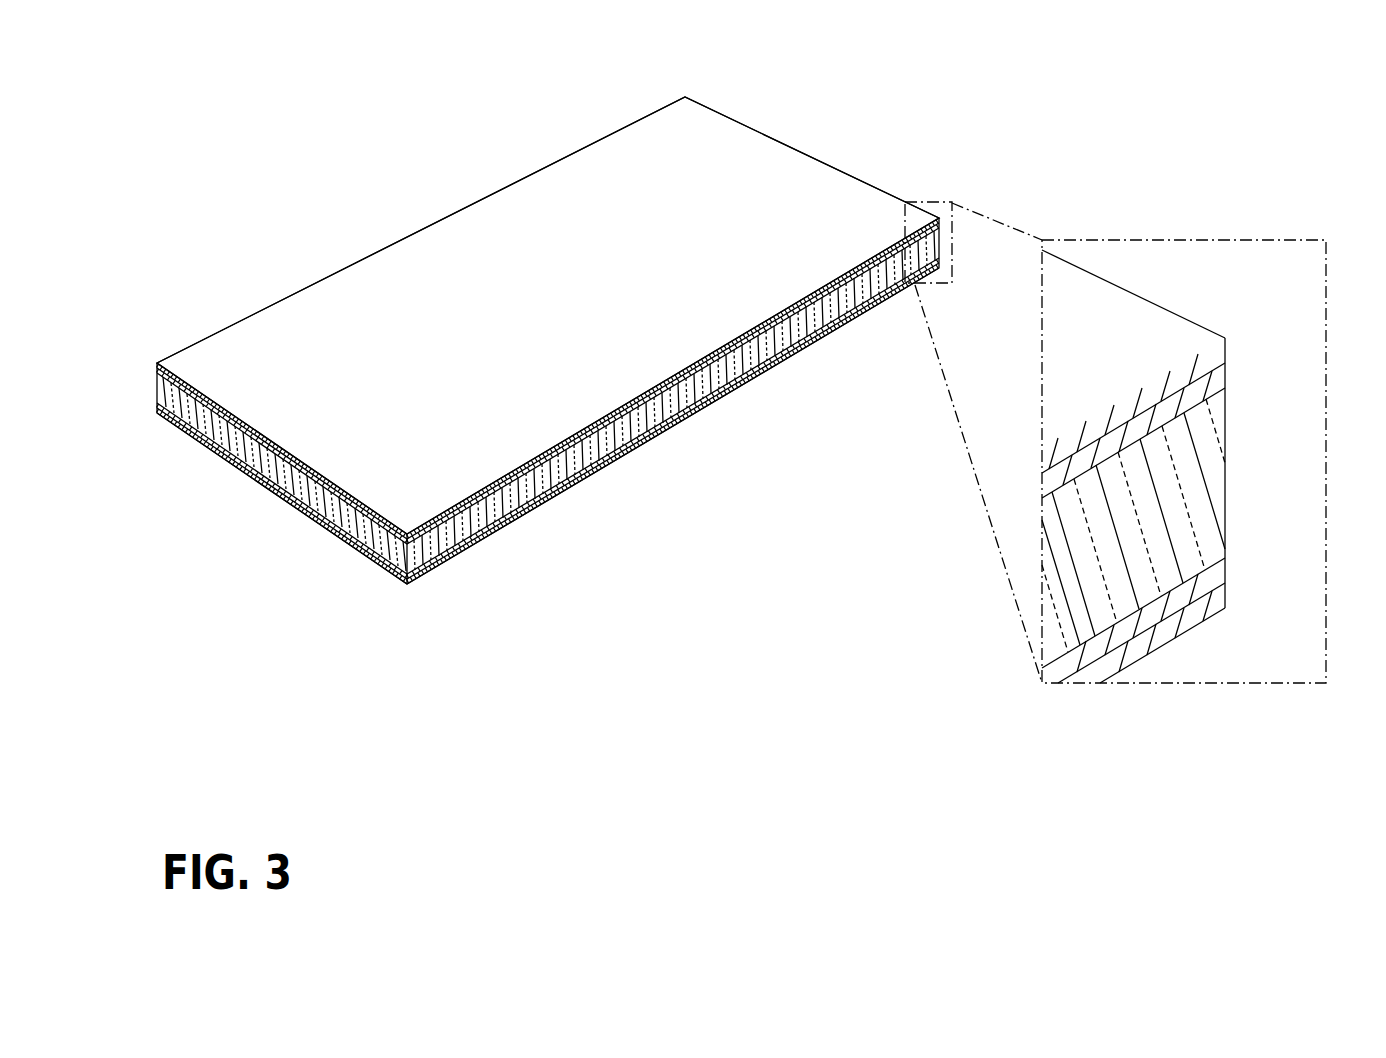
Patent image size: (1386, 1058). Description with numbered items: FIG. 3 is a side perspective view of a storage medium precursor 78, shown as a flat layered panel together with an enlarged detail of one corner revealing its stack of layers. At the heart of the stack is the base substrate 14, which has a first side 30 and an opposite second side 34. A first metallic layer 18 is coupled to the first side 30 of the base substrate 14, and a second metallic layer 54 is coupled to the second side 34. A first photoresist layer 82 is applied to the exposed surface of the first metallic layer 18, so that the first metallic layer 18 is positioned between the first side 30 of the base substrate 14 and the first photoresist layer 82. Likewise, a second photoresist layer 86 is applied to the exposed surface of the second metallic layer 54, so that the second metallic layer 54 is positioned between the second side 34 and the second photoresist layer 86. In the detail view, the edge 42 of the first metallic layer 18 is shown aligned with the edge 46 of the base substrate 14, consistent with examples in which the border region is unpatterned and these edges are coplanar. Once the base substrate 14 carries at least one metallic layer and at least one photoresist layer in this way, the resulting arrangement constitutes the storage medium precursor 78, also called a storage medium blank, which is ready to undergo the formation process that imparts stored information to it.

The storage medium precursor 78 is at (388, 138).
The first photoresist layer 82 is at (798, 177).
The second photoresist layer 86 is at (1215, 613).
The edge of the first metallic layer 42 is at (1225, 367).
The first metallic layer 18 is at (1233, 378).
The base substrate 14 is at (1236, 480).
The first side of the base substrate 30 is at (1193, 427).
The edge of the base substrate 46 is at (1147, 467).
The second side of the base substrate 34 is at (1193, 575).
The second metallic layer 54 is at (1236, 573).